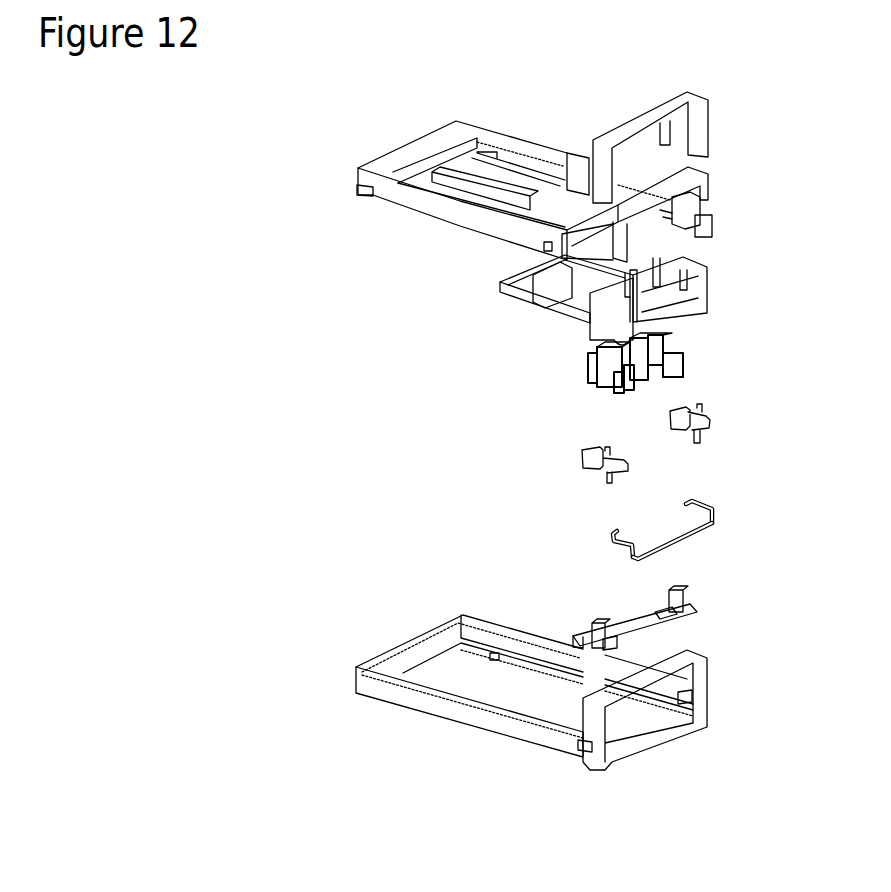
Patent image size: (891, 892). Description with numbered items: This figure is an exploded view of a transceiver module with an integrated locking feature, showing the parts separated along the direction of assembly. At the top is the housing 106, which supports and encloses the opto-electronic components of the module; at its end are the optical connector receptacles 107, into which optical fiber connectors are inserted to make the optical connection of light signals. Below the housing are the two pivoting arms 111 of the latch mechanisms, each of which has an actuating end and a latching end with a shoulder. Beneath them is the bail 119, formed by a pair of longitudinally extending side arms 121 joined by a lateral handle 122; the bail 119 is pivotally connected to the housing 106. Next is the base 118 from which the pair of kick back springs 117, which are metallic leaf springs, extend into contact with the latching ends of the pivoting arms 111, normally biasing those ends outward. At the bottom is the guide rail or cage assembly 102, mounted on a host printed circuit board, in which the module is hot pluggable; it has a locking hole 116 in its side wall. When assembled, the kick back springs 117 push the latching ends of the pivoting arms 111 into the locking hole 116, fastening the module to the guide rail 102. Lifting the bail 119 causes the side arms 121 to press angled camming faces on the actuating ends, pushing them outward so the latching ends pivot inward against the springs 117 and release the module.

The guide rail or cage assembly 102 is at (557, 708).
The housing 106 is at (417, 205).
The optical connector receptacles 107 is at (587, 380).
The pivoting arm 111 is at (567, 455).
The locking hole 116 is at (582, 748).
The kick back springs 117 is at (582, 613).
The base 118 is at (686, 619).
The bail 119 is at (681, 521).
The side arms 121 is at (622, 544).
The lateral handle 122 is at (687, 535).